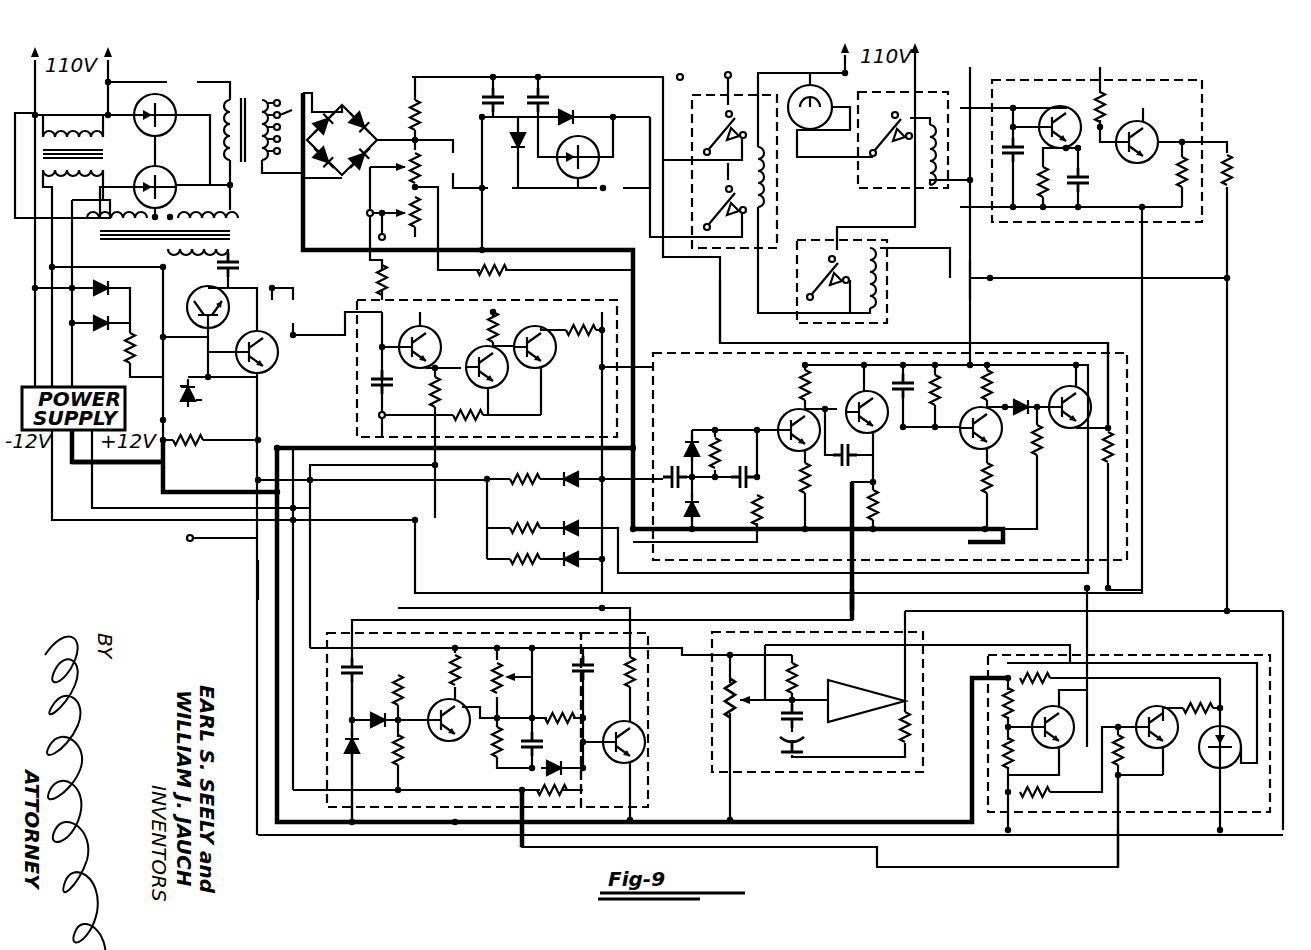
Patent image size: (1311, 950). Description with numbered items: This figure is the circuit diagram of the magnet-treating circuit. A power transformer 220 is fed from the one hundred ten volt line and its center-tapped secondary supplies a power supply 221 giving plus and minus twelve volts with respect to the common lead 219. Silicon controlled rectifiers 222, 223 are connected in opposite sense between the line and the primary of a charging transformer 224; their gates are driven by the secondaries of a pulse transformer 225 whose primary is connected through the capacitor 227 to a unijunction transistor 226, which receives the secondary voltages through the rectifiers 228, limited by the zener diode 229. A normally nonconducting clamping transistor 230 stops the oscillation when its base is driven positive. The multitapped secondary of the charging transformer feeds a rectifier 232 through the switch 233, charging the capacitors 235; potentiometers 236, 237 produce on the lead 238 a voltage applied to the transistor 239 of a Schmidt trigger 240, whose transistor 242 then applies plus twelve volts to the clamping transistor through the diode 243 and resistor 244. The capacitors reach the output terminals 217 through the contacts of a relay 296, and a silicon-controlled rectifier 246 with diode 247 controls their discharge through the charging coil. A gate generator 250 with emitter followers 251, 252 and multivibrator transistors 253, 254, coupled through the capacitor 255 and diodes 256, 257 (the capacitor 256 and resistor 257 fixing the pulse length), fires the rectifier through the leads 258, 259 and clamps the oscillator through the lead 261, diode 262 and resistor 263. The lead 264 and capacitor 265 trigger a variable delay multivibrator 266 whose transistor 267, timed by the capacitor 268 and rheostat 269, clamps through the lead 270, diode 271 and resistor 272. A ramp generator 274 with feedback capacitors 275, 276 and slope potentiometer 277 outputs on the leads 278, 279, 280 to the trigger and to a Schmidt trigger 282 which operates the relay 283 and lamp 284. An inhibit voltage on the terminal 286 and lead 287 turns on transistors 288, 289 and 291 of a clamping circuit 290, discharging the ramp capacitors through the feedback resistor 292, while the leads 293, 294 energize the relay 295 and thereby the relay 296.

The output terminals 217 is at (727, 72).
The common lead 219 is at (143, 465).
The power transformer 220 is at (85, 128).
The power supply 221 is at (106, 384).
The silicon controlled rectifier 222 is at (150, 94).
The silicon controlled rectifier 223 is at (175, 178).
The charging transformer 224 is at (245, 95).
The pulse transformer 225 is at (282, 233).
The unijunction transistor 226 is at (192, 330).
The capacitor 227 is at (238, 268).
The rectifiers 228 is at (128, 290).
The zener diode 229 is at (205, 422).
The clamping transistor 230 is at (250, 373).
The rectifier 232 is at (378, 110).
The switch 233 is at (291, 108).
The charging capacitors 235 is at (493, 90).
The potentiometer 236 is at (420, 150).
The potentiometer 237 is at (430, 205).
The lead 238 is at (368, 214).
The transistor 239 is at (414, 328).
The Schmidt trigger 240 is at (550, 303).
The transistor 242 is at (538, 378).
The diode 243 is at (565, 488).
The resistor 244 is at (510, 478).
The silicon-controlled rectifier 246 is at (596, 138).
The diode 247 is at (568, 110).
The gate generator 250 is at (684, 350).
The emitter follower 251 is at (870, 388).
The emitter follower 252 is at (1052, 399).
The transistor 253 is at (781, 414).
The transistor 254 is at (965, 455).
The capacitor 255 is at (670, 465).
The capacitor 256 is at (692, 447).
The resistor 257 is at (692, 520).
The lead 258 is at (1120, 352).
The lead 259 is at (716, 297).
The lead 261 is at (1090, 470).
The diode 262 is at (586, 524).
The resistor 263 is at (487, 530).
The lead 264 is at (850, 610).
The capacitor 265 is at (348, 655).
The variable delay one-shot multivibrator 266 is at (708, 787).
The multivibrator transistor 267 is at (645, 730).
The capacitor 268 is at (522, 752).
The rheostat 269 is at (520, 680).
The lead 270 is at (617, 605).
The diode 271 is at (562, 567).
The resistor 272 is at (506, 566).
The ramp generator 274 is at (926, 776).
The capacitor 275 is at (803, 724).
The capacitor 276 is at (796, 757).
The potentiometer 277 is at (728, 708).
The lead 278 is at (1205, 612).
The lead 279 is at (1227, 300).
The lead 280 is at (1083, 289).
The Schmidt trigger 282 is at (1262, 102).
The relay 283 is at (880, 190).
The lamp 284 is at (808, 85).
The terminal 286 is at (186, 540).
The lead 287 is at (257, 578).
The transistor 288 is at (1075, 721).
The transistor 289 is at (1160, 760).
The clamping circuit 290 is at (1137, 654).
The transistor 291 is at (1222, 770).
The ramp generator feedback resistor 292 is at (906, 770).
The lead 293 is at (1106, 836).
The lead 294 is at (995, 272).
The relay 295 is at (940, 291).
The relay 296 is at (840, 187).